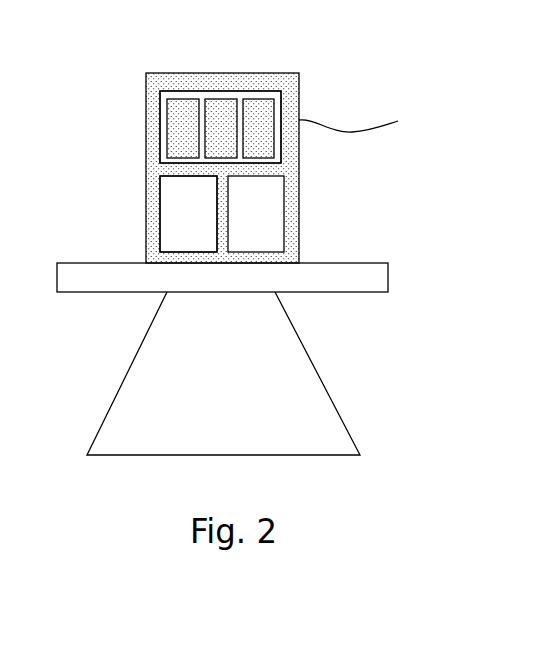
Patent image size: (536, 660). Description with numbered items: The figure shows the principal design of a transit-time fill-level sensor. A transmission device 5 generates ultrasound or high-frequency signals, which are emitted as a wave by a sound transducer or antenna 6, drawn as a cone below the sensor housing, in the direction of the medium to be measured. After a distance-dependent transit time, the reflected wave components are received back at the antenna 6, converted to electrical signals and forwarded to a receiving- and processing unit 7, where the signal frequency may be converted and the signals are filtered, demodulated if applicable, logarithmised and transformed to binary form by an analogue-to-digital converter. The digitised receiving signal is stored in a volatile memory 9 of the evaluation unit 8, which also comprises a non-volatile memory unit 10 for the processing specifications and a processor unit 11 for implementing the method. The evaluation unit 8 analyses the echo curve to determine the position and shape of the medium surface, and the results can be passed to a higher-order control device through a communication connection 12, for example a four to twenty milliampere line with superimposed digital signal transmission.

The transmission device 5 is at (287, 236).
The antenna 6 is at (133, 387).
The receiving- and processing unit 7 is at (158, 226).
The evaluation unit 8 is at (160, 117).
The volatile memory 9 is at (181, 98).
The non-volatile memory unit 10 is at (222, 98).
The processor unit 11 is at (260, 98).
The communication connection 12 is at (355, 132).